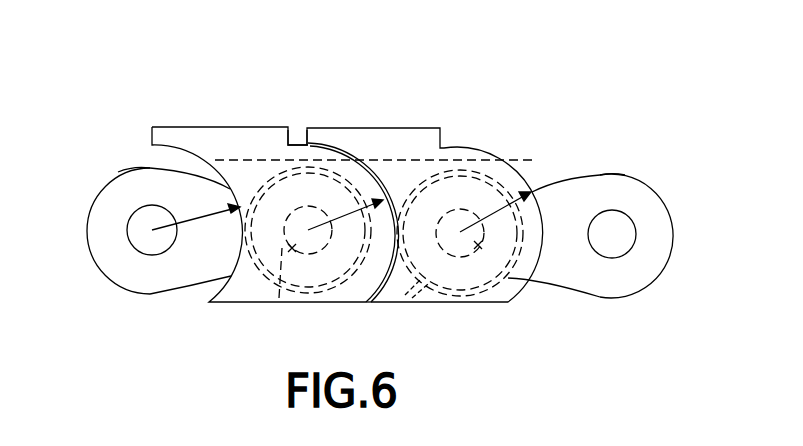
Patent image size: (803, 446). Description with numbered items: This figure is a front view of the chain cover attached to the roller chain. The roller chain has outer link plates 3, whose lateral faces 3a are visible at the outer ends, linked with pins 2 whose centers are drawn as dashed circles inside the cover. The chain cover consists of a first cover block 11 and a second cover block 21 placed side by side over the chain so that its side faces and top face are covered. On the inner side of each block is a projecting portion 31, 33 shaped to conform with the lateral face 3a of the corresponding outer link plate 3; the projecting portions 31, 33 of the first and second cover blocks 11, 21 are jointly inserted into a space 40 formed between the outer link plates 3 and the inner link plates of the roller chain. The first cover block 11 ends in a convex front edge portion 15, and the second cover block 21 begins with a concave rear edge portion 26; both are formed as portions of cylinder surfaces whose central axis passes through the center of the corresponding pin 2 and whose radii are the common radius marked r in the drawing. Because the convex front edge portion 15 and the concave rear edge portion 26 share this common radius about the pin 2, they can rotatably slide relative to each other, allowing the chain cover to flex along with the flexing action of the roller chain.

The pin 2 is at (278, 305).
The outer link plate 3 is at (100, 216).
The lateral face 3a is at (119, 170).
The first cover block 11 is at (217, 112).
The convex front edge portion 15 is at (298, 128).
The second cover block 21 is at (418, 107).
The concave rear edge portion 26 is at (349, 158).
The projecting portion 31 is at (352, 303).
The projecting portion 33 is at (413, 304).
The space 40 is at (385, 302).